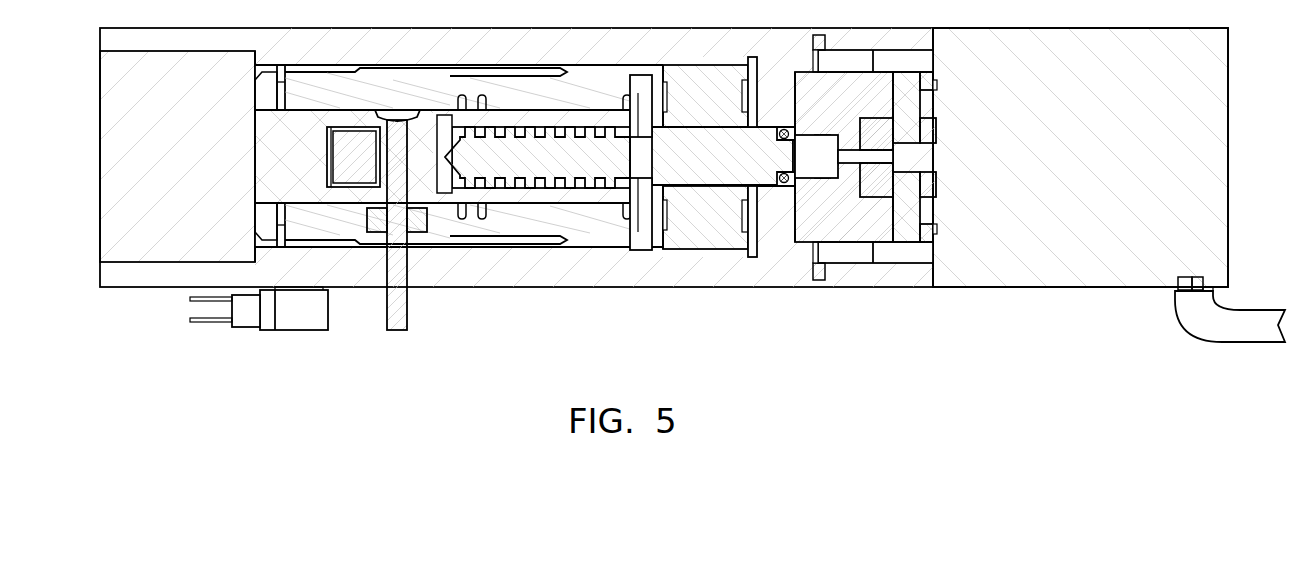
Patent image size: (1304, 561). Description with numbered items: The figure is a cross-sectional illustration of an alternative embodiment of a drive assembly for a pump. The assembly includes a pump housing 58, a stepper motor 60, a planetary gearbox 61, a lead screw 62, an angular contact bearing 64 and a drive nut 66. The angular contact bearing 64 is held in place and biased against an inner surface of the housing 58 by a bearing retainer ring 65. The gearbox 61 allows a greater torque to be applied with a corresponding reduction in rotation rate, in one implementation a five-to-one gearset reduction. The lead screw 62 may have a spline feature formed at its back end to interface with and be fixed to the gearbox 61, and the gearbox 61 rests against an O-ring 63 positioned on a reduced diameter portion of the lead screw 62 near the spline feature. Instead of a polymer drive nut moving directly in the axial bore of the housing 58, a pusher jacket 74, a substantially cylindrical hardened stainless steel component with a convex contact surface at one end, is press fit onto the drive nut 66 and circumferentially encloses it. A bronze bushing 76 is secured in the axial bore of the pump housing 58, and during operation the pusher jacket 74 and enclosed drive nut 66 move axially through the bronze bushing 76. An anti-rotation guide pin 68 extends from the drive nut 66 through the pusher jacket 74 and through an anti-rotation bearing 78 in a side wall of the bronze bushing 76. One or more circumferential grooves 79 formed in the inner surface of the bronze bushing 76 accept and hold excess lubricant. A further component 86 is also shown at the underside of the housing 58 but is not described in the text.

The pump housing 58 is at (603, 288).
The stepper motor 60 is at (1052, 288).
The planetary gearbox 61 is at (845, 236).
The lead screw 62 is at (586, 169).
The O-ring 63 is at (787, 130).
The angular contact bearing 64 is at (697, 250).
The bearing retainer ring 65 is at (752, 258).
The drive nut 66 is at (506, 120).
The anti-rotation guide pin 68 is at (408, 317).
The pusher jacket 74 is at (345, 123).
The bronze bushing 76 is at (399, 85).
The anti-rotation bearing 78 is at (381, 231).
The circumferential grooves 79 is at (483, 220).
The connector 86 is at (280, 331).